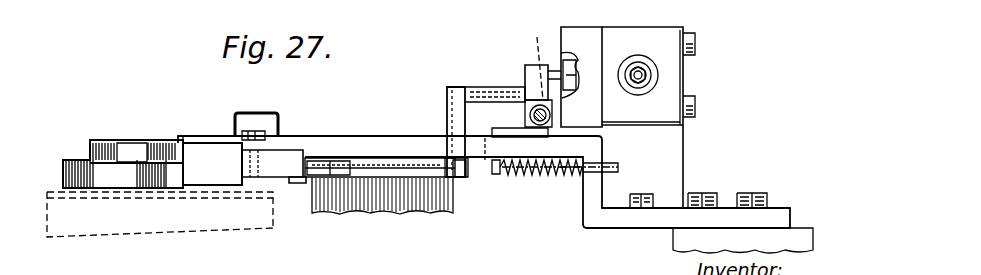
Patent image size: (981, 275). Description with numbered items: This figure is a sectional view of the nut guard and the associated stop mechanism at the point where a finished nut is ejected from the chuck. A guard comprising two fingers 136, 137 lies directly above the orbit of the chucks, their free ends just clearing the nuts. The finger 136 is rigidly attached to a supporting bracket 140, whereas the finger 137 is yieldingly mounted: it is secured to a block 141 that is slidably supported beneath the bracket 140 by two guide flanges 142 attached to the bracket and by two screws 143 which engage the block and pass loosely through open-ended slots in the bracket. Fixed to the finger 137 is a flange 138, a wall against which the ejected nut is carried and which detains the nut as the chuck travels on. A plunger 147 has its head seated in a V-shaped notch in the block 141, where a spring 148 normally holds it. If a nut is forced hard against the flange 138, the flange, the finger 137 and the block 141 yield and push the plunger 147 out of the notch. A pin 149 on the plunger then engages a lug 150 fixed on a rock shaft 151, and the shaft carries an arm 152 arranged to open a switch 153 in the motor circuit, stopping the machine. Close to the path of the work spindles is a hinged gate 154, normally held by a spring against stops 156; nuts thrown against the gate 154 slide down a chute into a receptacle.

The finger 136 is at (157, 188).
The finger 137 is at (93, 188).
The flange 138 is at (212, 178).
The supporting bracket 140 is at (383, 141).
The block 141 is at (277, 170).
The guide flanges 142 is at (297, 184).
The screws 143 is at (250, 131).
The plunger 147 is at (434, 205).
The spring 148 is at (535, 176).
The pin 149 is at (482, 96).
The lug 150 is at (538, 58).
The rock shaft 151 is at (522, 114).
The arm 152 is at (526, 74).
The switch 153 is at (587, 34).
The gate 154 is at (388, 208).
The stops 156 is at (669, 107).